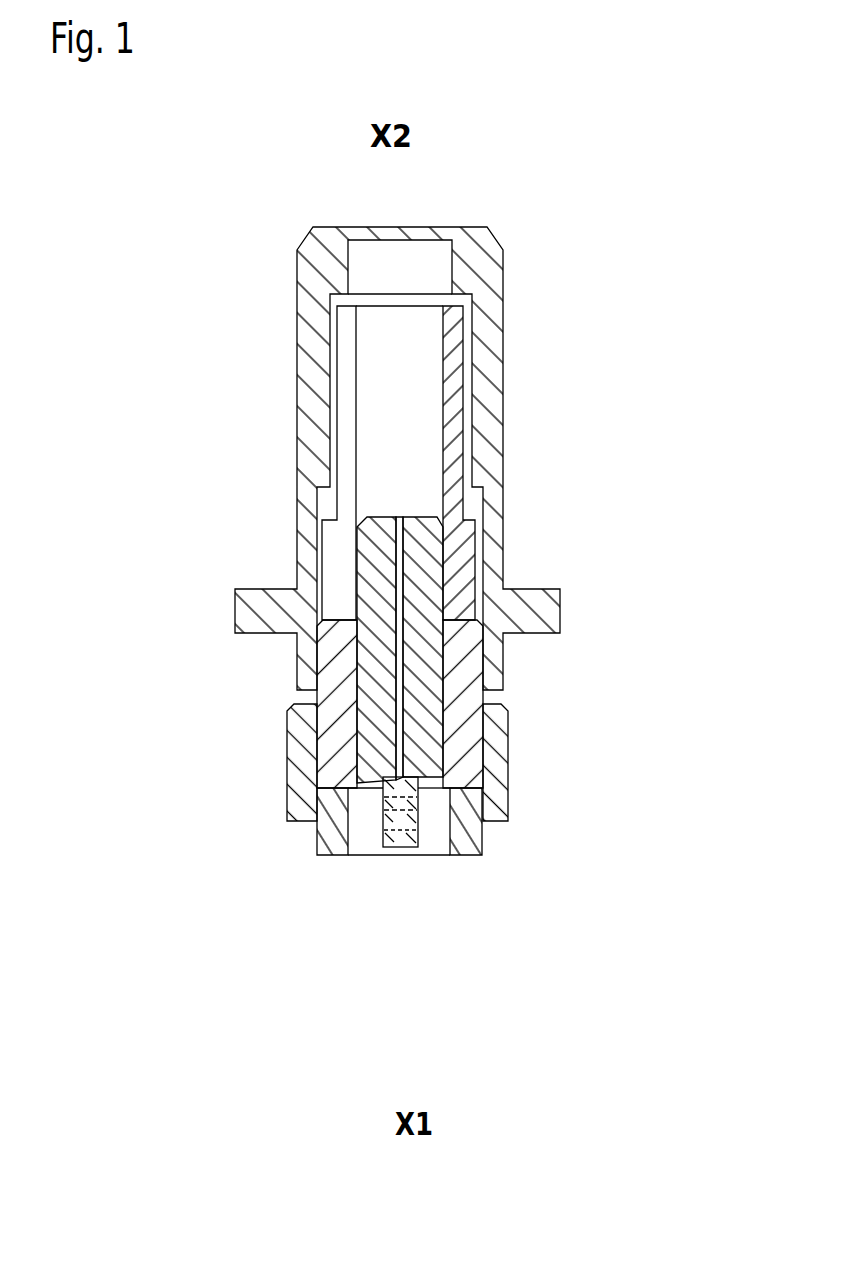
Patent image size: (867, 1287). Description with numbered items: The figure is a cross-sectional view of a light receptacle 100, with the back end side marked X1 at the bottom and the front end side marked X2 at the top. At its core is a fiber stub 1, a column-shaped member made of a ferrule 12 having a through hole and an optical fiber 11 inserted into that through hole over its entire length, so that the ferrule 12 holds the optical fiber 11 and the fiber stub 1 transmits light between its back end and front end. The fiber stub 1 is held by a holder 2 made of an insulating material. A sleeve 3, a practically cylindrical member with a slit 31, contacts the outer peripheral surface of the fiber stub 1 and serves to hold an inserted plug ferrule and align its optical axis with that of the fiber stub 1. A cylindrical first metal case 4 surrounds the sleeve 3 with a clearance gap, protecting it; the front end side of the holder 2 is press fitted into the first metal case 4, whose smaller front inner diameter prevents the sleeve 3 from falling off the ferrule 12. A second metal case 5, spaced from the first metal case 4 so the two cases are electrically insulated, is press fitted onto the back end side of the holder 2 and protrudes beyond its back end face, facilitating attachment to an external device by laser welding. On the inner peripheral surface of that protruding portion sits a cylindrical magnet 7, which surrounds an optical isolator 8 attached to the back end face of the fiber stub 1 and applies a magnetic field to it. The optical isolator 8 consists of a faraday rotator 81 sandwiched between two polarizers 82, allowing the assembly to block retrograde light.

The light receptacle 100 is at (199, 214).
The fiber stub 1 is at (542, 650).
The optical fiber 11 is at (397, 672).
The ferrule 12 is at (433, 738).
The holder 2 is at (337, 731).
The sleeve 3 is at (376, 463).
The slit 31 is at (340, 512).
The first metal case 4 is at (307, 402).
The second metal case 5 is at (297, 793).
The magnet 7 is at (470, 838).
The optical isolator 8 is at (369, 918).
The faraday rotator 81 is at (402, 822).
The polarizers 82 is at (478, 973).